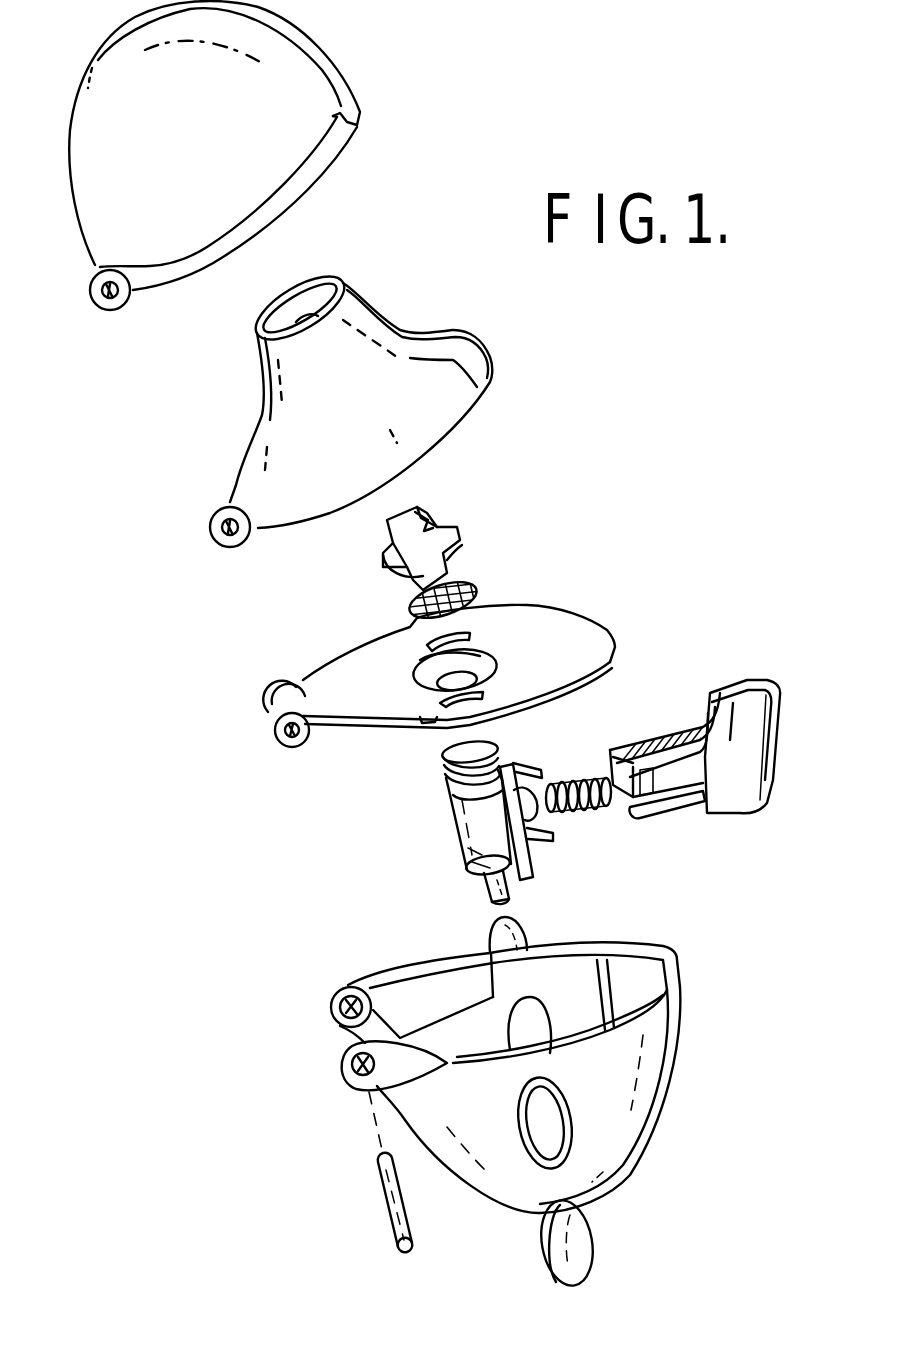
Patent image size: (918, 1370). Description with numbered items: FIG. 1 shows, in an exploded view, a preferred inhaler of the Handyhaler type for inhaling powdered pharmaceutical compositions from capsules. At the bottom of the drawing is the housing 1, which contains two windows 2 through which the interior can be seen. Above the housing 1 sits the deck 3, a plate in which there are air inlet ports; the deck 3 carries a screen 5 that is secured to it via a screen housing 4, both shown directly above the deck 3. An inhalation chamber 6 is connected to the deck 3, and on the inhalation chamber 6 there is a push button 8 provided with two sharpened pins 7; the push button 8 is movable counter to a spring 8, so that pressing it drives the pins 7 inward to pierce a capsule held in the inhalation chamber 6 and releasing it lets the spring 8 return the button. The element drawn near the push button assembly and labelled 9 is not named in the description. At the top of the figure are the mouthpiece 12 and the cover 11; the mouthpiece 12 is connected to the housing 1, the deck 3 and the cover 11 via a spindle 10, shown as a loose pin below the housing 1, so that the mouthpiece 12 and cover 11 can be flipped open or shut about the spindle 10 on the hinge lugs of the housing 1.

The housing 1 is at (650, 1067).
The windows 2 is at (553, 1250).
The deck 3 is at (377, 697).
The screen housing 4 is at (463, 543).
The screen 5 is at (407, 608).
The inhalation chamber 6 is at (463, 840).
The sharpened pins 7 is at (643, 737).
The push button 8 is at (587, 810).
The push button block 9 is at (743, 763).
The spindle 10 is at (387, 1198).
The cover 11 is at (273, 67).
The mouthpiece 12 is at (256, 443).